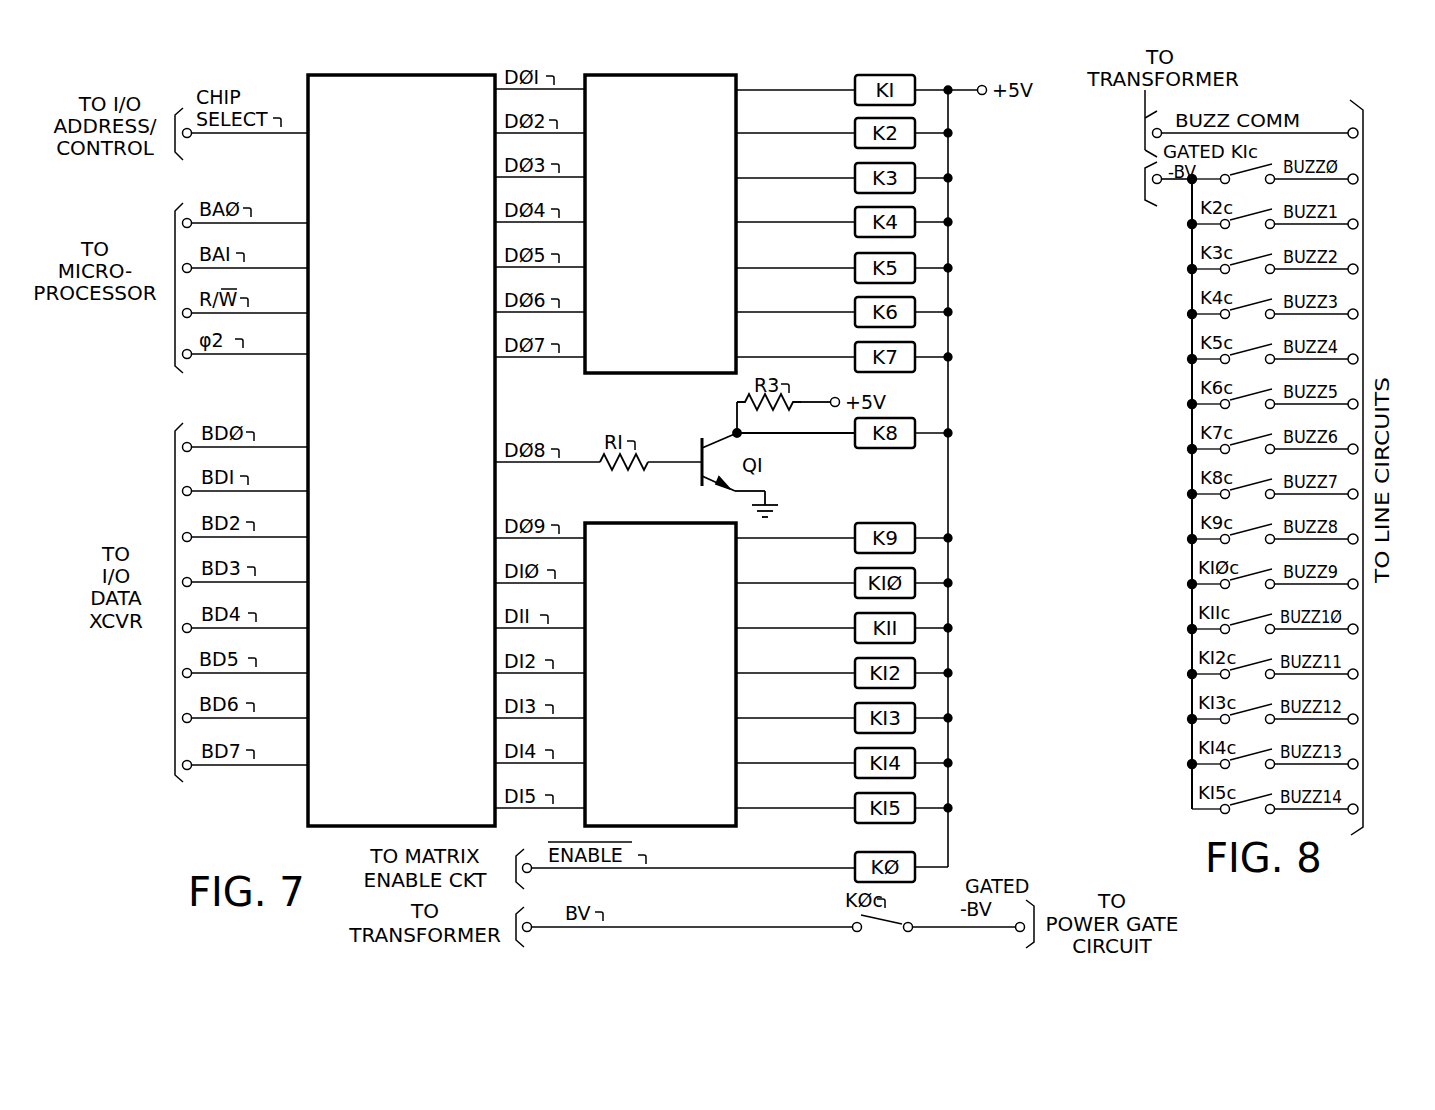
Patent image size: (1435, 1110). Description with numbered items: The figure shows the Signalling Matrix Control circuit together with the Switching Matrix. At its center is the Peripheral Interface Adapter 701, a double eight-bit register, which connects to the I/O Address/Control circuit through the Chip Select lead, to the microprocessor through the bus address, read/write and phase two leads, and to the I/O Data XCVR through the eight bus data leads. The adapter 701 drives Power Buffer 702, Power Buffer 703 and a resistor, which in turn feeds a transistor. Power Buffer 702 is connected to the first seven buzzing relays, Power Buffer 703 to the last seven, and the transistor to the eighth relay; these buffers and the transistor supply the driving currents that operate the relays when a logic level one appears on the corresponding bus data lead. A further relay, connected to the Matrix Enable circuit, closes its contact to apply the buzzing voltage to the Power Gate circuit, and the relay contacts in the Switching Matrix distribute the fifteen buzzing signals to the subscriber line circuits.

The Peripheral Interface Adapter (PIA) 701 is at (379, 327).
The Power Buffer 702 is at (638, 265).
The Power Buffer 703 is at (638, 730).